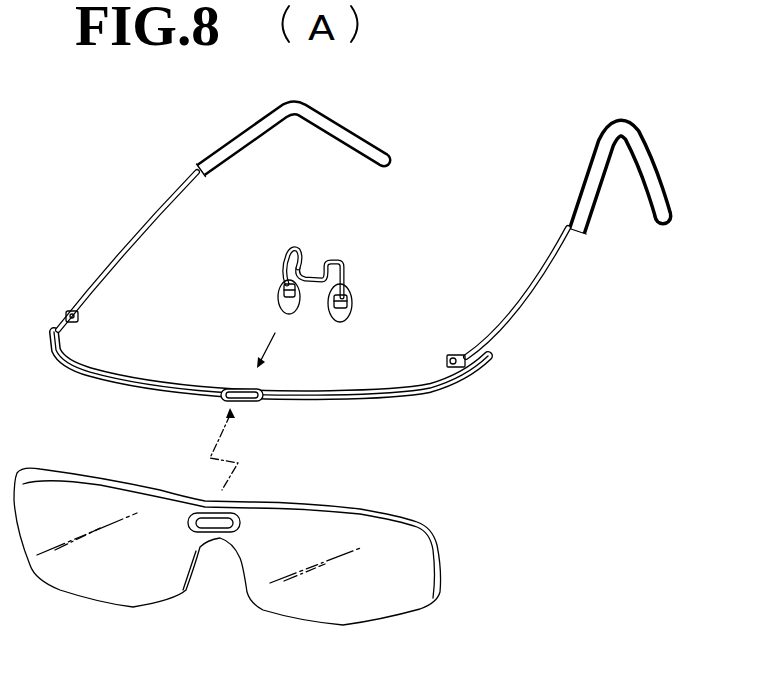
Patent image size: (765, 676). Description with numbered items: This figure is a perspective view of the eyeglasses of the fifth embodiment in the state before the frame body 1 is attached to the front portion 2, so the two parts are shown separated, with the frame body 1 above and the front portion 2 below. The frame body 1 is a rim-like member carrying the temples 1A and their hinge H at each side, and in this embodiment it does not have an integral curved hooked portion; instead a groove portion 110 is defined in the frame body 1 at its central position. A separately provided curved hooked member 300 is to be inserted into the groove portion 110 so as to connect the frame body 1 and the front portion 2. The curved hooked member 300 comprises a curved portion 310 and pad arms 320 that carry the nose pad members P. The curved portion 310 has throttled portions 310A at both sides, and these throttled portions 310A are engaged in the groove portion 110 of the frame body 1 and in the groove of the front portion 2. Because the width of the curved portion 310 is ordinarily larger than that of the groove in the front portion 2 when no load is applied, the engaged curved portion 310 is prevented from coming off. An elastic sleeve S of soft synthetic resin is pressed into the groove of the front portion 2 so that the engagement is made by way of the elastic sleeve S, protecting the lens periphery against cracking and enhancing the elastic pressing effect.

The frame body 1 is at (512, 337).
The temple 1A is at (528, 290).
The front portion 2 is at (402, 503).
The groove portion 110 is at (251, 400).
The curved hooked member 300 is at (346, 249).
The curved portion 310 is at (280, 276).
The throttled portions 310A is at (288, 257).
The pad arms 320 is at (348, 282).
The hinge H is at (448, 356).
The nose pad members P is at (345, 322).
The elastic sleeve S is at (201, 513).